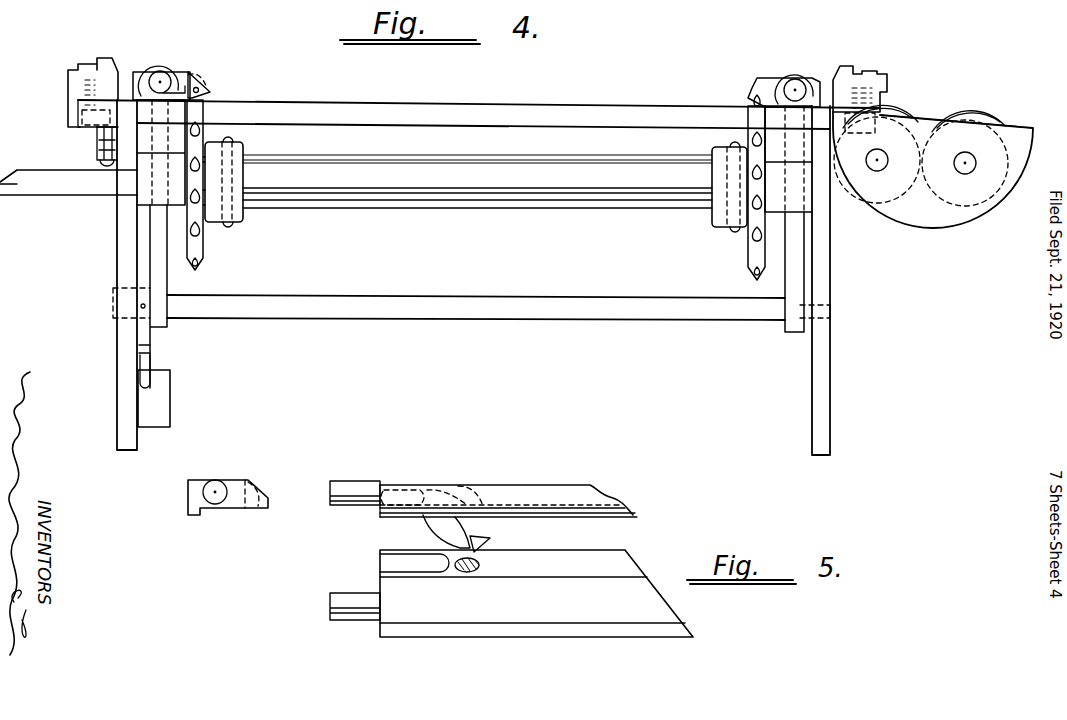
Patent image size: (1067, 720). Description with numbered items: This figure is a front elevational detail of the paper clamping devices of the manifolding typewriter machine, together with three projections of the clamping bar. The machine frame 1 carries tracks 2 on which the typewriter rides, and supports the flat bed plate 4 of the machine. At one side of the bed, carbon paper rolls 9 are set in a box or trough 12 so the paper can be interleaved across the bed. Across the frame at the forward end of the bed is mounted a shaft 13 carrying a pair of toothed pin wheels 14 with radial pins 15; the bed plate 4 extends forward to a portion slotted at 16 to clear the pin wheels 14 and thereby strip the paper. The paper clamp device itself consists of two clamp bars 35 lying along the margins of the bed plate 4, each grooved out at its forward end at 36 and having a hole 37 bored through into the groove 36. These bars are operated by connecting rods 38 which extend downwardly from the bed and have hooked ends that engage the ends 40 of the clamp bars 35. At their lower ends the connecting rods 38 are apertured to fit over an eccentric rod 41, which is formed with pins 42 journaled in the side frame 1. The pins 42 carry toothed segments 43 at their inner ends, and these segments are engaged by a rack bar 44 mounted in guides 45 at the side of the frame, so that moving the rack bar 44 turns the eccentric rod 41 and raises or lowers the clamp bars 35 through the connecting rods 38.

In FIG. 4, the machine frame 1 is at (825, 404).
In FIG. 4, the tracks 2 is at (886, 80).
In FIG. 4, the bed plate 4 is at (636, 116).
In FIG. 4, the carbon paper rolls 9 is at (998, 158).
In FIG. 4, the box or trough 12 is at (940, 230).
In FIG. 4, the shaft 13 is at (620, 212).
In FIG. 4, the pin wheels 14 is at (758, 244).
In FIG. 4, the radial pins 15 is at (745, 232).
In FIG. 4, the slot 16 is at (205, 112).
In FIG. 4, the clamp bars 35 is at (170, 82).
In FIG. 5, the clamp bars 35 is at (228, 480).
In FIG. 4, the groove 36 is at (196, 84).
In FIG. 5, the groove 36 is at (252, 512).
In FIG. 4, the hole 37 is at (200, 72).
In FIG. 5, the hole 37 is at (255, 482).
In FIG. 4, the connecting rods 38 is at (170, 268).
In FIG. 5, the ends of the clamp bars 40 is at (350, 486).
In FIG. 4, the eccentric rod 41 is at (444, 311).
In FIG. 4, the pins 42 is at (128, 300).
In FIG. 4, the toothed segments 43 is at (150, 350).
In FIG. 4, the rack bar 44 is at (168, 369).
In FIG. 4, the guides 45 is at (170, 408).